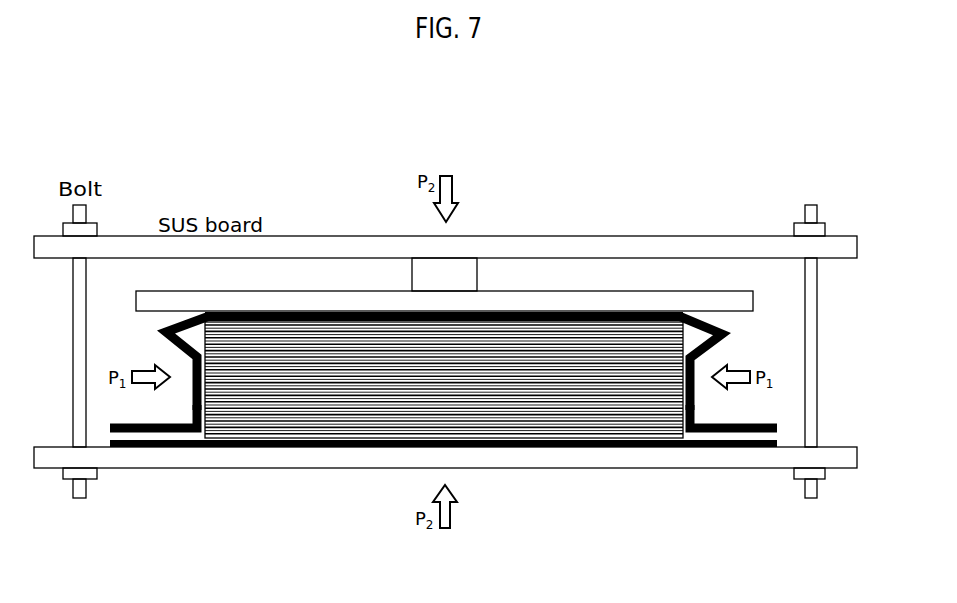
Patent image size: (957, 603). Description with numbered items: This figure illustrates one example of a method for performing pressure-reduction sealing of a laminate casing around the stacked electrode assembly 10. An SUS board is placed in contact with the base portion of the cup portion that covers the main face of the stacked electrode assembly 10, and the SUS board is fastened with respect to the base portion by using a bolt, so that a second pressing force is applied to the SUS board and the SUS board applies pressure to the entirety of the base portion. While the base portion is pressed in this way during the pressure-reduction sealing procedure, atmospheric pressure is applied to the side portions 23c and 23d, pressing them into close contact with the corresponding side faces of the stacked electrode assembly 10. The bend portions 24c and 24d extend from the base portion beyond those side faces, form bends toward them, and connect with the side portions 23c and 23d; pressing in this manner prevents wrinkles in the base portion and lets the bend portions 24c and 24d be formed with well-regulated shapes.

The stacked electrode assembly 10 is at (601, 434).
The side portion 23c is at (185, 407).
The side portion 23d is at (702, 408).
The bend portion 24c is at (158, 333).
The bend portion 24d is at (730, 334).